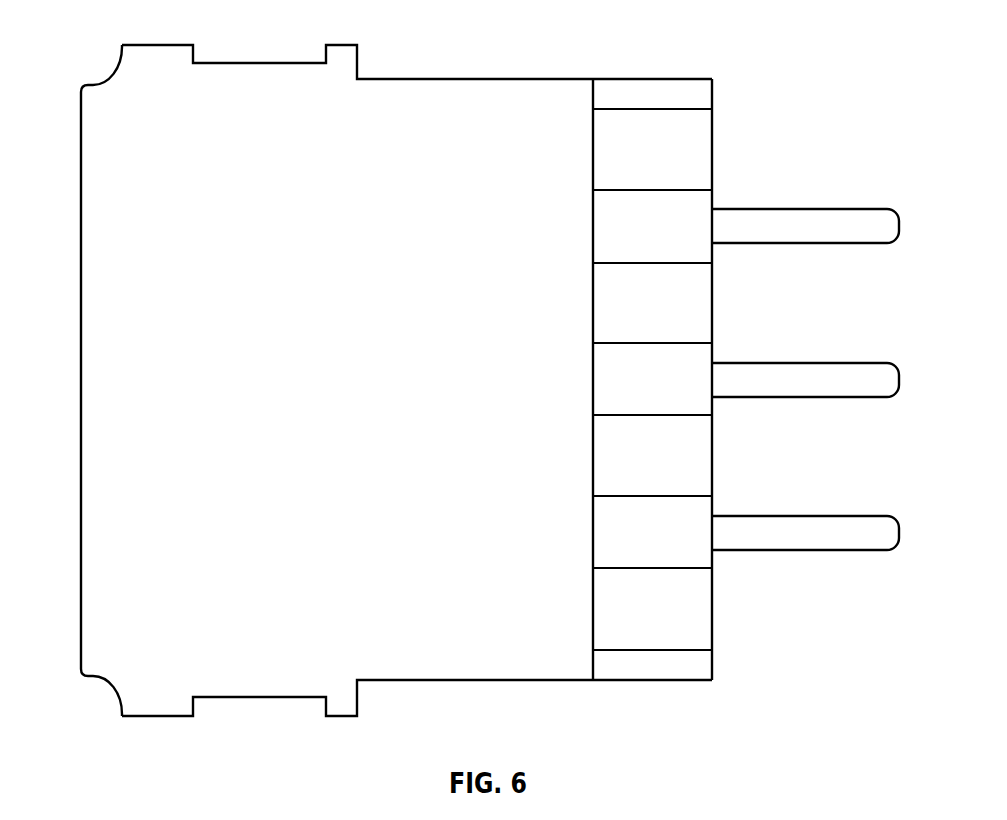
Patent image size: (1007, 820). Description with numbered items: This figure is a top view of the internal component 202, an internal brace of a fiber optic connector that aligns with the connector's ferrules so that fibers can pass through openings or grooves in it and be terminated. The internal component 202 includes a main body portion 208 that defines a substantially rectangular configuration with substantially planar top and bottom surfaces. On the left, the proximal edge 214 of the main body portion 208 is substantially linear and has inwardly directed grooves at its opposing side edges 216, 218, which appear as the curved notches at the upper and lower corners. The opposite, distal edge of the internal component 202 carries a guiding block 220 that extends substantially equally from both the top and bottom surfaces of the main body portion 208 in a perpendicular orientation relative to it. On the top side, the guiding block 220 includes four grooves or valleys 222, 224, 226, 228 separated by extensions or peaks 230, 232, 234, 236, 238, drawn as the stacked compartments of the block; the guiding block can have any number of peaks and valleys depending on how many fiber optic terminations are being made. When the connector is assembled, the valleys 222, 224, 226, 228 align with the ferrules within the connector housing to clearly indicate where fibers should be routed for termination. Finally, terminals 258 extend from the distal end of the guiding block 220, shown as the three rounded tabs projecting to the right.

The internal component 202 is at (859, 48).
The main body portion 208 is at (410, 122).
The proximal edge 214 is at (81, 226).
The side edge 216 is at (115, 82).
The side edge 218 is at (107, 677).
The guiding block 220 is at (650, 77).
The valley 222 is at (698, 150).
The valley 224 is at (698, 299).
The valley 226 is at (698, 450).
The valley 228 is at (698, 608).
The peak 230 is at (698, 97).
The peak 232 is at (613, 236).
The peak 234 is at (613, 384).
The peak 236 is at (613, 538).
The peak 238 is at (650, 667).
The terminals 258 is at (853, 208).